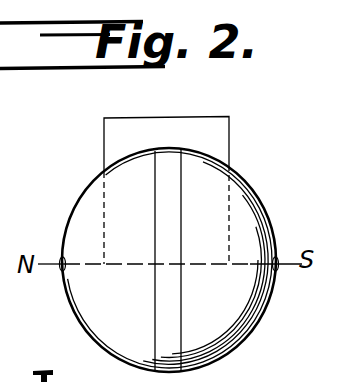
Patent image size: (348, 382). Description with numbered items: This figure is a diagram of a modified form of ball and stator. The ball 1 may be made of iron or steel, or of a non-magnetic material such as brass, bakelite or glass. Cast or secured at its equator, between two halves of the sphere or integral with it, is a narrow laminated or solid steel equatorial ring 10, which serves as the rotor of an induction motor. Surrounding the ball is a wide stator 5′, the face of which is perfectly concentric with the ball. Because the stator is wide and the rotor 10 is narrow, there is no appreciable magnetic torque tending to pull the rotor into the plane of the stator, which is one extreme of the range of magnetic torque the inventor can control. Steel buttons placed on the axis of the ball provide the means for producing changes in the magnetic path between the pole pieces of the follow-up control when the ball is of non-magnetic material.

The ball 1 is at (169, 260).
The equatorial ring 10 is at (175, 211).
The wide stator 5' is at (185, 182).